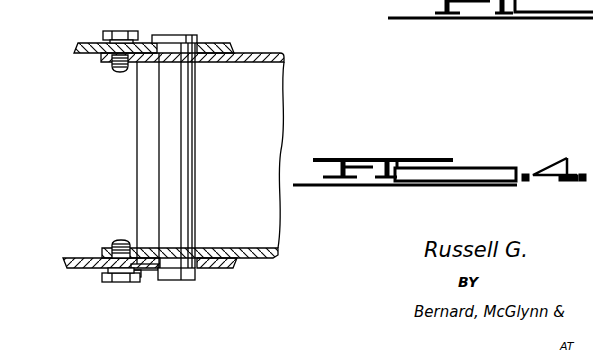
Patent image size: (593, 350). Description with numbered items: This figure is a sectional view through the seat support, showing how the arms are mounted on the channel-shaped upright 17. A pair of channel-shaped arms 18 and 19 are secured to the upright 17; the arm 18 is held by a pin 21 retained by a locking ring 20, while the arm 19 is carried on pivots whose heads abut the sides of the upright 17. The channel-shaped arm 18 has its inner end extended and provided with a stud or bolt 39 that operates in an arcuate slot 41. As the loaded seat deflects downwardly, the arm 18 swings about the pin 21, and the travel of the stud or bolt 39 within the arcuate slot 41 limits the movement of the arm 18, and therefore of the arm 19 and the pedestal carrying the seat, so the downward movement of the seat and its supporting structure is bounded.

The channel-shaped upright 17 is at (83, 268).
The channel-shaped arm 18 is at (257, 51).
The channel-shaped arm 19 is at (208, 43).
The locking ring 20 is at (195, 270).
The pin 21 is at (183, 107).
The stud or bolt 39 is at (127, 31).
The arcuate slot 41 is at (108, 60).